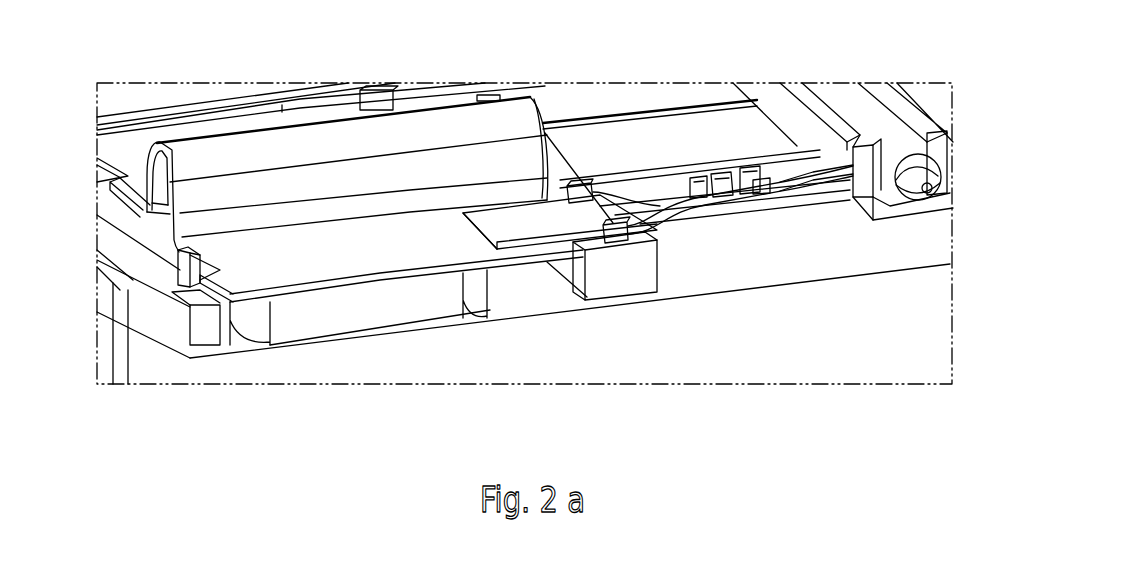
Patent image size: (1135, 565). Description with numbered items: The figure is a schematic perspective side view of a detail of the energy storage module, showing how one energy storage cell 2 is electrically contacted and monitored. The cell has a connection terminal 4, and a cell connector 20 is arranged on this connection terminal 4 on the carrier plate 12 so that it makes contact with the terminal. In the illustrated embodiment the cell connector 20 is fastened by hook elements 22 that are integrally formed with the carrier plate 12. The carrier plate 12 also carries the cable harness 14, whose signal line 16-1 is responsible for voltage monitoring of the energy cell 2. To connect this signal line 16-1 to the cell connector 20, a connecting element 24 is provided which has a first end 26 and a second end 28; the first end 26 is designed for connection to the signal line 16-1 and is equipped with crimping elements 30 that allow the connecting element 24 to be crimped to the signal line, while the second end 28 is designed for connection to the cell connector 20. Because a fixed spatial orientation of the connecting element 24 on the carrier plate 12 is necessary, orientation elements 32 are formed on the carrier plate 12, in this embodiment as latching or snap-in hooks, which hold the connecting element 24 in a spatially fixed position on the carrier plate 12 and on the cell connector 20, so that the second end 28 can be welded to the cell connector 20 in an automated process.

The energy storage cell 2 is at (155, 362).
The connection terminal 4 is at (377, 318).
The carrier plate 12 is at (636, 286).
The cable harness 14 is at (847, 97).
The signal line 16-1 is at (800, 181).
The cell connector 20 is at (283, 268).
The hook elements 22 is at (183, 269).
The connecting element 24 is at (552, 232).
The first end 26 is at (737, 196).
The second end 28 is at (490, 229).
The crimping elements 30 is at (750, 178).
The orientation elements 32 is at (610, 222).